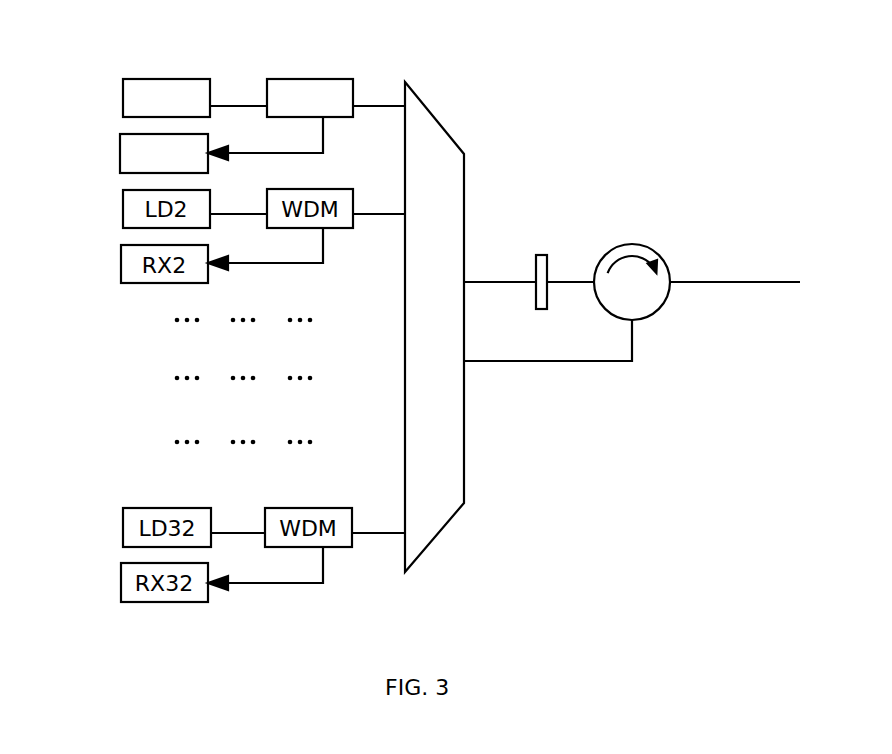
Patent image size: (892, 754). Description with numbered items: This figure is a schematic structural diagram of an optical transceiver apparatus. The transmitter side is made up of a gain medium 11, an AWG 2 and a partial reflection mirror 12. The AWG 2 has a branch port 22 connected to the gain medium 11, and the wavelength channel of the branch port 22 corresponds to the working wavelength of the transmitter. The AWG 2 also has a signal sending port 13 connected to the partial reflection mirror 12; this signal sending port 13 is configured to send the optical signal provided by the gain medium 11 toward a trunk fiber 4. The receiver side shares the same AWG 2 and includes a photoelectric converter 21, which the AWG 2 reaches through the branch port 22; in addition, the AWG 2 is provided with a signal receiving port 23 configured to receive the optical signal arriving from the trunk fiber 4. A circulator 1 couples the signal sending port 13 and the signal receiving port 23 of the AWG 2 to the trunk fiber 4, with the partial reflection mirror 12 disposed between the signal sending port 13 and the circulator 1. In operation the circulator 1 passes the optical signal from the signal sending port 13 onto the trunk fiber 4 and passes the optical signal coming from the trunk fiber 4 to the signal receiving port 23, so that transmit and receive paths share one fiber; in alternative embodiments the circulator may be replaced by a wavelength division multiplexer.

The gain medium 11 is at (152, 79).
The photoelectric converter 21 is at (127, 158).
The branch port 22 is at (377, 97).
The AWG 2 is at (437, 175).
The signal sending port 13 is at (488, 280).
The partial reflection mirror 12 is at (539, 253).
The circulator 1 is at (633, 243).
The trunk fiber 4 is at (733, 281).
The signal receiving port 23 is at (530, 363).